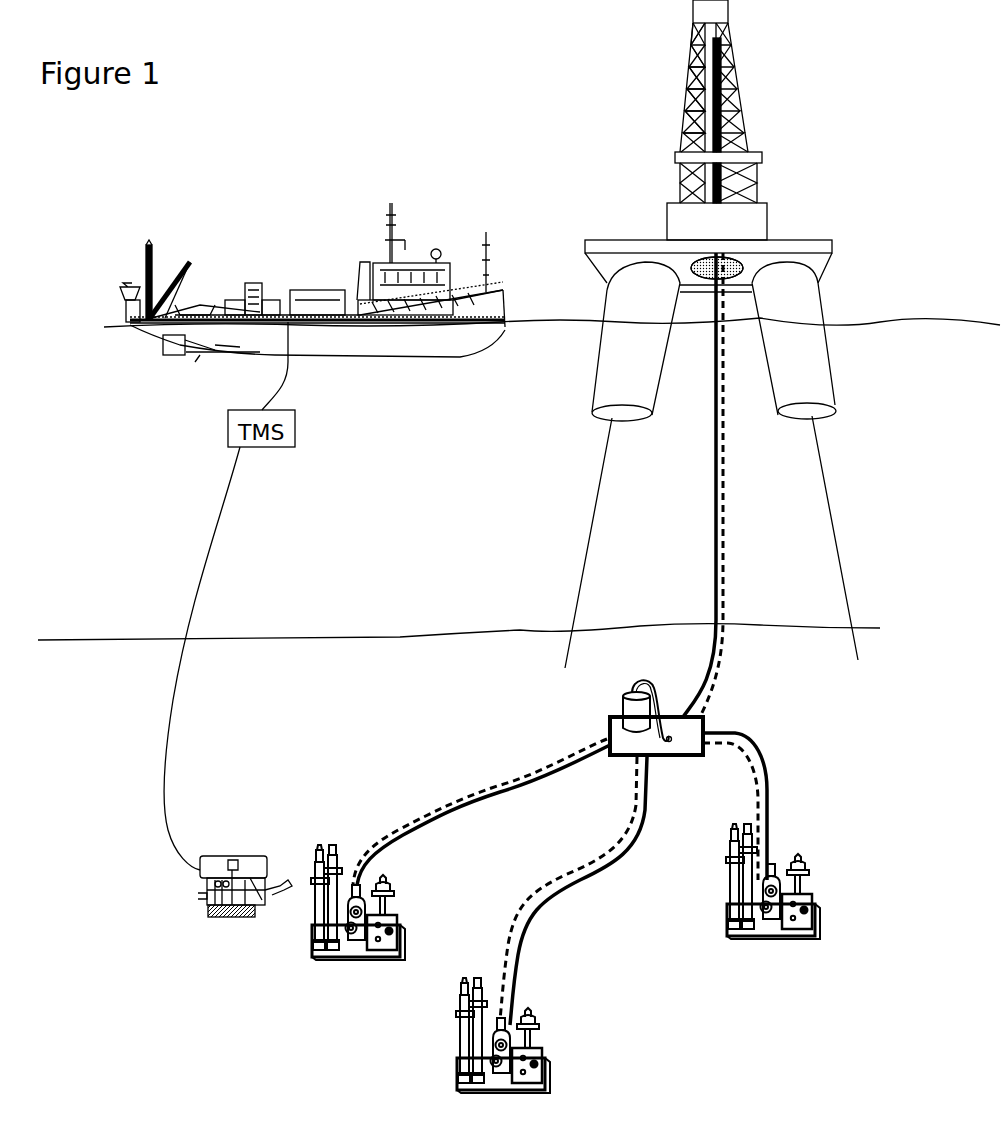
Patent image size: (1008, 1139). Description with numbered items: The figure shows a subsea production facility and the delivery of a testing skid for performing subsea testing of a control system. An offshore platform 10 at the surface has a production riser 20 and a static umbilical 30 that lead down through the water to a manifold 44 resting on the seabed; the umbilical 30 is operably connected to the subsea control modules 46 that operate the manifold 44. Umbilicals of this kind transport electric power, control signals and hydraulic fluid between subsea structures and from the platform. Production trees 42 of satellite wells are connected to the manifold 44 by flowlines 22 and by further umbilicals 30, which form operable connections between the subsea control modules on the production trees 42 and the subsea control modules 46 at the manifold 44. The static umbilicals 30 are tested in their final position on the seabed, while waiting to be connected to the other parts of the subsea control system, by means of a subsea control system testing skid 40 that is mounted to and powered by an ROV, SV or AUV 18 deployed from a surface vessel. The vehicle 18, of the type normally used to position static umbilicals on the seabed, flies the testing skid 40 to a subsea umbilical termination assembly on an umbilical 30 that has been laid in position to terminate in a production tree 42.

The platform 10 is at (755, 138).
The ROV, SV or AUV 18 is at (252, 857).
The production riser 20 is at (698, 600).
The flowlines 22 is at (432, 820).
The static umbilical 30 is at (758, 600).
The subsea control system testing skid 40 is at (208, 912).
The production trees 42 is at (358, 960).
The manifold 44 is at (678, 717).
The subsea control modules 46 is at (636, 717).